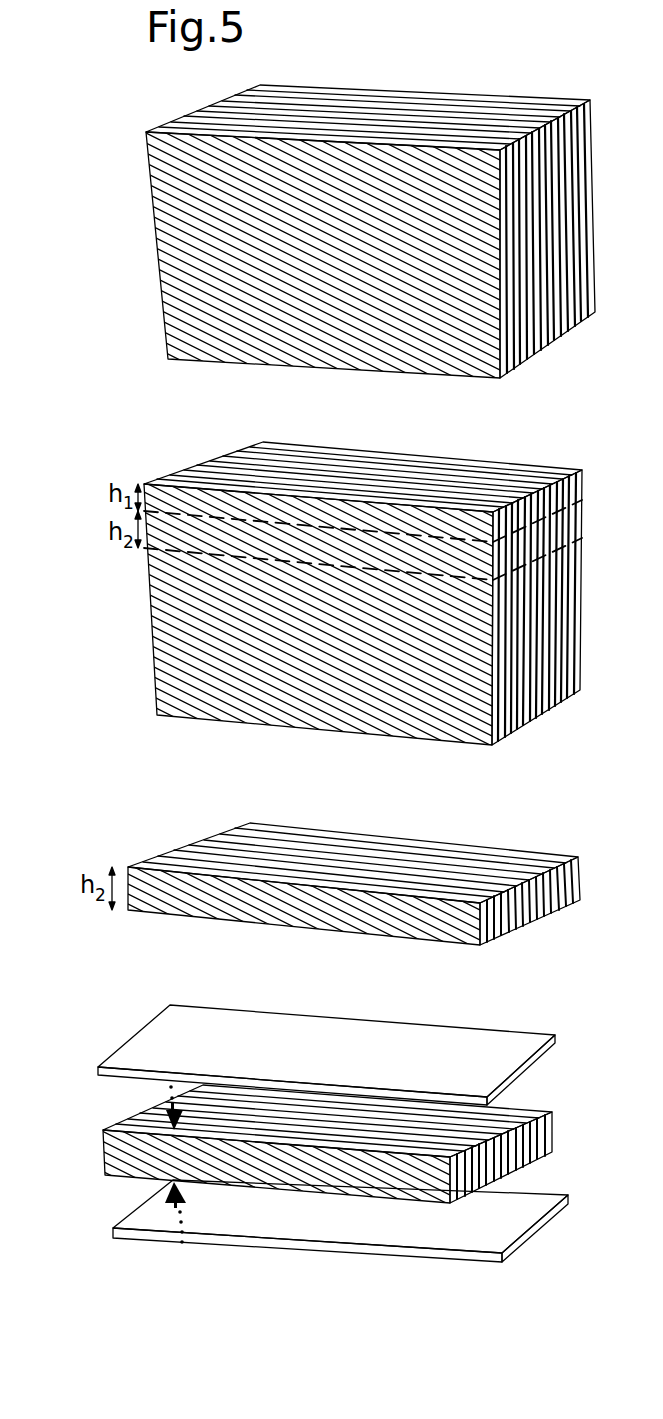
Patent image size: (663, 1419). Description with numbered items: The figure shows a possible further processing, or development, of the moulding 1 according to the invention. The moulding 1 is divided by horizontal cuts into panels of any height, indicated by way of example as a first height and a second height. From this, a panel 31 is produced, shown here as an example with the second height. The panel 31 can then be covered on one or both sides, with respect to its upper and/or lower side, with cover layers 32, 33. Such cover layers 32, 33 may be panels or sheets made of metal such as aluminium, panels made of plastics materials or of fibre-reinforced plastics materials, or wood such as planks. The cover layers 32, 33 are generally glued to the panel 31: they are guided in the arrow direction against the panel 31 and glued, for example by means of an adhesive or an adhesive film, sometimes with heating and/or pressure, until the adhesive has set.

The moulding 1 is at (146, 234).
The panel 31 is at (184, 841).
The cover layer 32 is at (158, 1046).
The cover layer 33 is at (147, 1218).